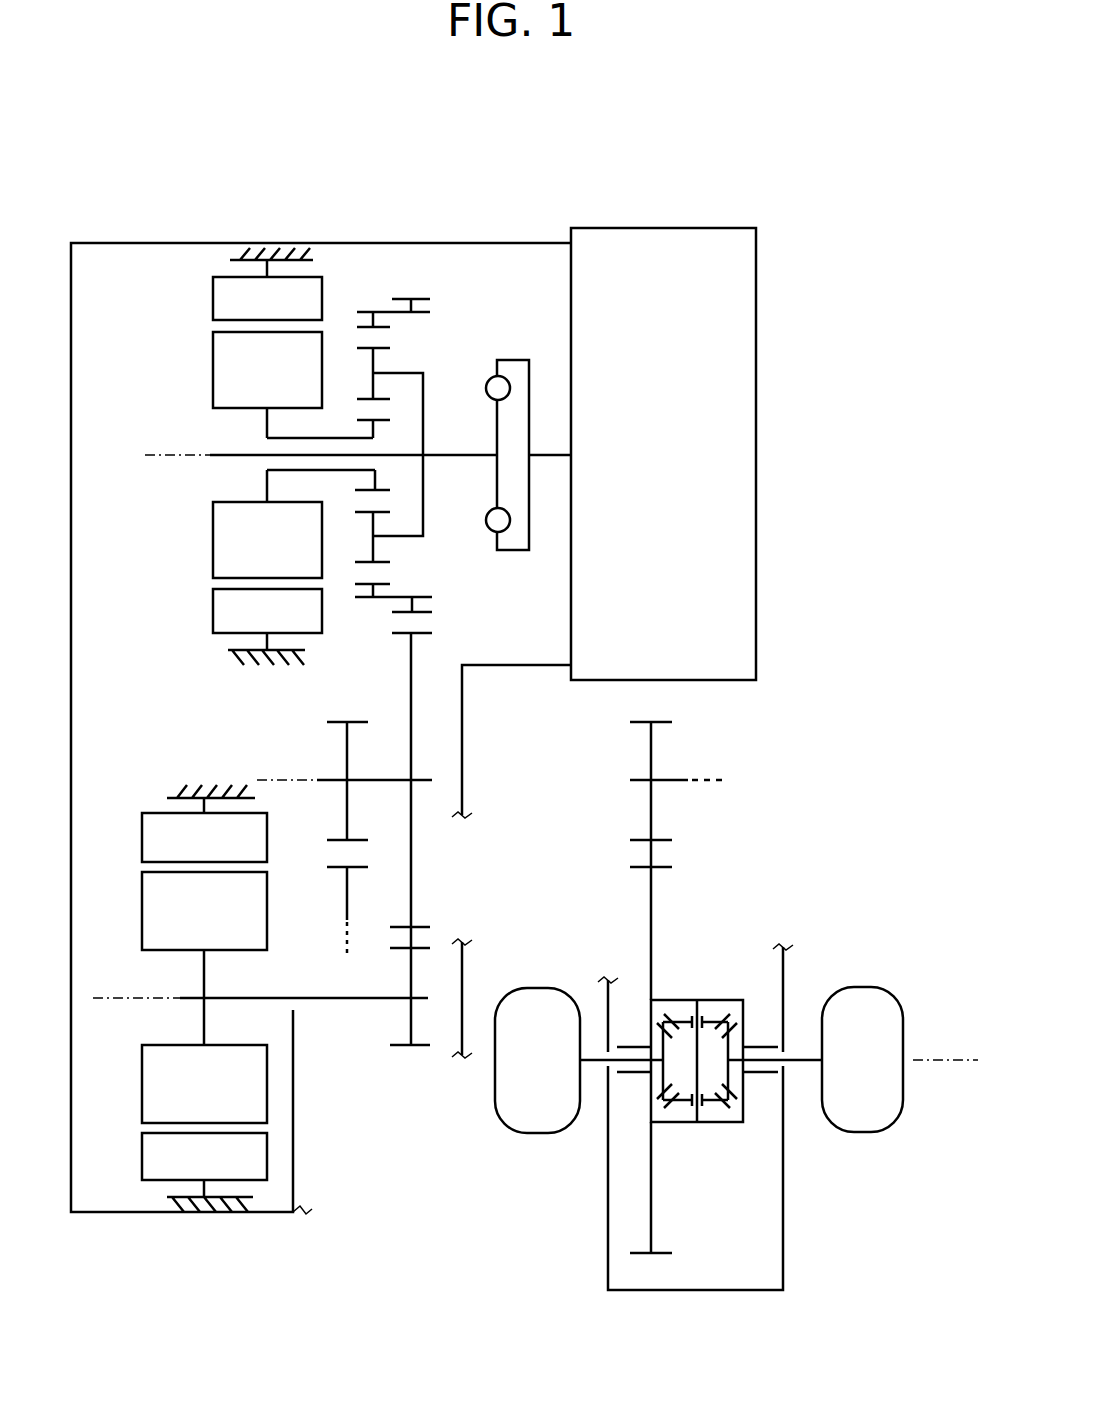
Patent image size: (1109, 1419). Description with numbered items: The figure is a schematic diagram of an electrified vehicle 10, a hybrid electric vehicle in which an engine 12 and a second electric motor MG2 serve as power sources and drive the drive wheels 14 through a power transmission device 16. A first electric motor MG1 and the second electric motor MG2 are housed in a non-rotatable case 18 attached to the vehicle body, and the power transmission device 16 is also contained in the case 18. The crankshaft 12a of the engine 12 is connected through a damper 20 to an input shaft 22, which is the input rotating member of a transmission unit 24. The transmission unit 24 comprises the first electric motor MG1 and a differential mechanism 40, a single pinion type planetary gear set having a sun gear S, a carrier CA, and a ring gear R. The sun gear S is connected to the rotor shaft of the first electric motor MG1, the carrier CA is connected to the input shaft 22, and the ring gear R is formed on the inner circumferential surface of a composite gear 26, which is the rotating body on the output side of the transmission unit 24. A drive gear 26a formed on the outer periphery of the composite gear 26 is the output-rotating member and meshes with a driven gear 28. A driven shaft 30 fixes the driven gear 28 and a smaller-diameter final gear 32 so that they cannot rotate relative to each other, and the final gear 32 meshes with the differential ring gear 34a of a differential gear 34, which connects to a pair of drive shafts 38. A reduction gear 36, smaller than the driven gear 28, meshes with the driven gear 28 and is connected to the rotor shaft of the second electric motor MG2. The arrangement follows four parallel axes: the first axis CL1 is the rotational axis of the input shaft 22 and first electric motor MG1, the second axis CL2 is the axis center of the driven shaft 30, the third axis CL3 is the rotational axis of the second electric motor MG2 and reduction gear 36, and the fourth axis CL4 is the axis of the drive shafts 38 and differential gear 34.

The electrified vehicle 10 is at (616, 138).
The engine 12 is at (713, 663).
The crankshaft 12a is at (553, 459).
The drive wheels 14 is at (540, 1122).
The power transmission device 16 is at (410, 1262).
The case 18 is at (163, 243).
The damper 20 is at (505, 360).
The input shaft 22 is at (452, 453).
The transmission unit 24 is at (410, 240).
The composite gear 26 is at (388, 600).
The drive gear 26a is at (416, 608).
The driven gear 28 is at (420, 637).
The driven shaft 30 is at (345, 778).
The final gear 32 is at (343, 838).
The differential gear 34 is at (703, 1154).
The differential ring gear 34a is at (343, 868).
The reduction gear 36 is at (400, 1043).
The drive shafts 38 is at (597, 1073).
The differential mechanism 40 is at (373, 272).
The first electric motor MG1 is at (267, 456).
The second electric motor MG2 is at (204, 998).
The ring gear R is at (362, 326).
The sun gear S is at (379, 424).
The carrier CA is at (397, 372).
The first axis CL1 is at (152, 453).
The second axis CL2 is at (268, 780).
The third axis CL3 is at (110, 996).
The fourth axis CL4 is at (945, 1057).